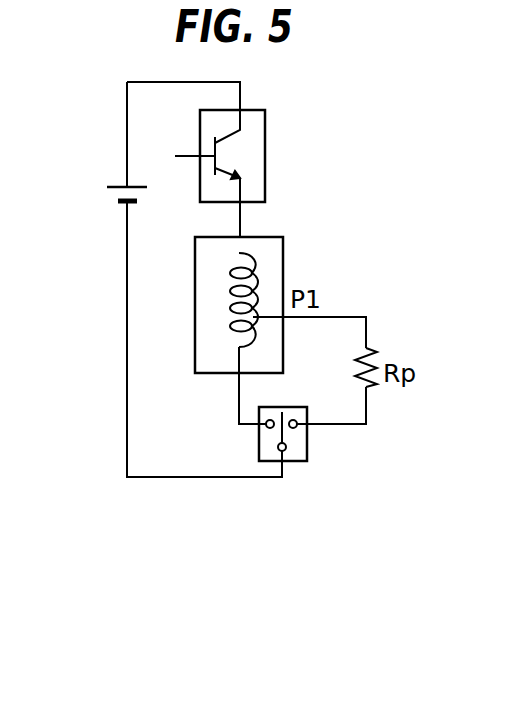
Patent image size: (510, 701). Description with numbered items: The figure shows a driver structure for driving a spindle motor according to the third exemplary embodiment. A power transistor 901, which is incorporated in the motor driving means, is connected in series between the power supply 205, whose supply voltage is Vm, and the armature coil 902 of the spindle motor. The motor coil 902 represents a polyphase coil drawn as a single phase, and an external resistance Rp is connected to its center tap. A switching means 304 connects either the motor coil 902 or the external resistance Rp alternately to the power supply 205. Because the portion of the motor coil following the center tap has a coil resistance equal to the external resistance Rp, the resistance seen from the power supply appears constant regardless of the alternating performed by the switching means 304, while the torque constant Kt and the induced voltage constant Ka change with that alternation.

The power transistor 901 is at (266, 124).
The armature coil 902 is at (283, 240).
The power supply 205 is at (118, 186).
The switching means 304 is at (307, 452).